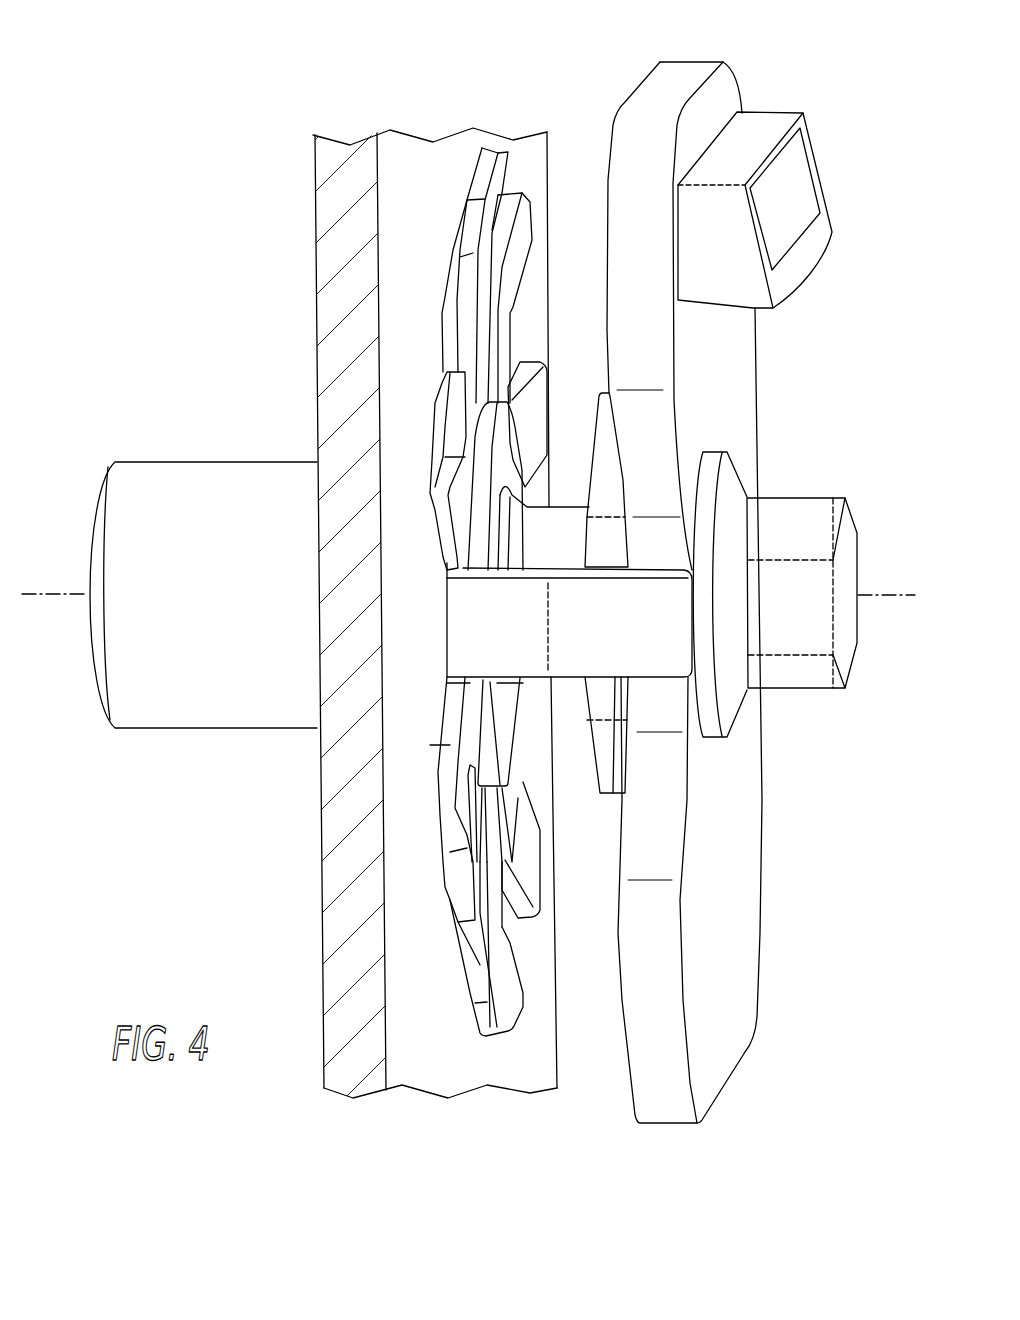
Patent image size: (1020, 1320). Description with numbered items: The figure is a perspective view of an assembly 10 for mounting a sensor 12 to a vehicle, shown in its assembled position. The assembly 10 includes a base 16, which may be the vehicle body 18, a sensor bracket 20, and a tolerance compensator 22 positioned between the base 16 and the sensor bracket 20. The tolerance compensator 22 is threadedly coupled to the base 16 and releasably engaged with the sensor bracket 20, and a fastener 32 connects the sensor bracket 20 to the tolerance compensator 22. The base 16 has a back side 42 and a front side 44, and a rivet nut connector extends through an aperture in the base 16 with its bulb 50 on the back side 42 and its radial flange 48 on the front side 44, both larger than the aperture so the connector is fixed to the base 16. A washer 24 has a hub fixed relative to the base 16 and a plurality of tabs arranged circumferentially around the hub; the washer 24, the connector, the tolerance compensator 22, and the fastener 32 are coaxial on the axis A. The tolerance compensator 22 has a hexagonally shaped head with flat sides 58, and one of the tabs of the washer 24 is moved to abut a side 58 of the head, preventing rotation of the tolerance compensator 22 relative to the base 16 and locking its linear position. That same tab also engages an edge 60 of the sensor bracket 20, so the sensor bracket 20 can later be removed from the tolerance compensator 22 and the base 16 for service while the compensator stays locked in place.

The assembly 10 is at (840, 1103).
The sensor 12 is at (793, 173).
The base 16 is at (511, 1062).
The vehicle body 18 is at (408, 599).
The sensor bracket 20 is at (733, 1015).
The tolerance compensator 22 is at (607, 482).
The washer 24 is at (452, 745).
The fastener 32 is at (847, 554).
The back side 42 is at (317, 195).
The front side 44 is at (393, 203).
The radial flange 48 is at (507, 752).
The bulb 50 is at (185, 462).
The sides 58 is at (607, 700).
The edge 60 is at (670, 698).
The axis A is at (480, 596).